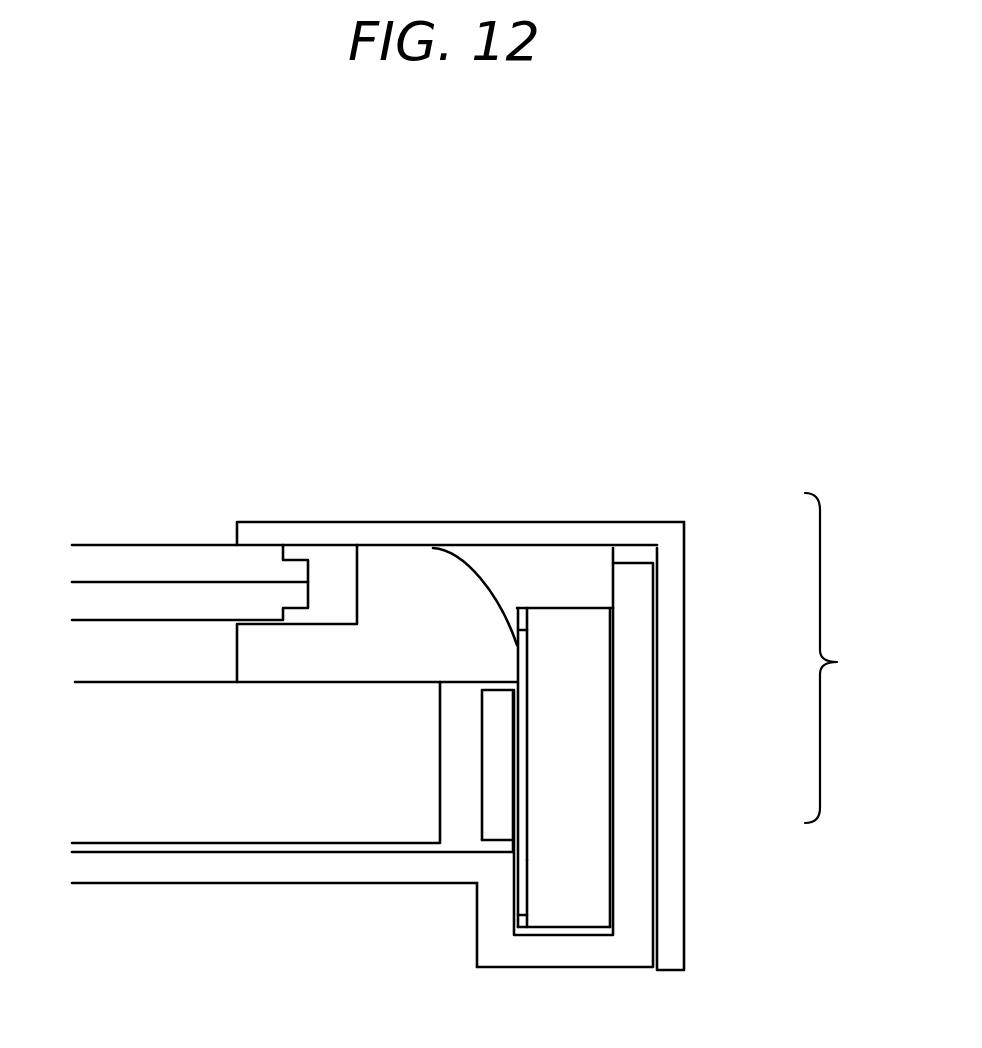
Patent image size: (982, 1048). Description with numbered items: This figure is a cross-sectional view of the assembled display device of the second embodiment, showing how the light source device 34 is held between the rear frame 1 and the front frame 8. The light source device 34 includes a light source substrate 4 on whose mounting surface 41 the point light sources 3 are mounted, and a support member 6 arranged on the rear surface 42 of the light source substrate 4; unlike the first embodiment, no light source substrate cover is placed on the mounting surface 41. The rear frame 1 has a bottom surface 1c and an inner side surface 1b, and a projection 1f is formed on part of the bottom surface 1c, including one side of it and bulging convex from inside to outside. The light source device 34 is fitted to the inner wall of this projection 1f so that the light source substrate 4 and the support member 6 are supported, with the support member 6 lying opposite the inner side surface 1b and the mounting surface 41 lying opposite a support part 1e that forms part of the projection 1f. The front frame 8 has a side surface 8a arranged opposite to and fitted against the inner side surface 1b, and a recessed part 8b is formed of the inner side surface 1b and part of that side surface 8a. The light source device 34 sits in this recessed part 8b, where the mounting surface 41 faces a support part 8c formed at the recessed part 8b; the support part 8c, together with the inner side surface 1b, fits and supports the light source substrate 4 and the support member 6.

The rear frame 1 is at (137, 863).
The inner side surface 1b is at (603, 904).
The bottom surface 1c is at (272, 855).
The support part 1e is at (475, 927).
The projection 1f is at (563, 943).
The point light source 3 is at (500, 722).
The light source substrate 4 is at (520, 688).
The mounting surface 41 is at (495, 836).
The rear surface 42 is at (528, 875).
The support member 6 is at (597, 633).
The front frame 8 is at (412, 572).
The side surface 8a is at (613, 610).
The recessed part 8b is at (548, 603).
The support part 8c is at (430, 548).
The light source device 34 is at (843, 658).